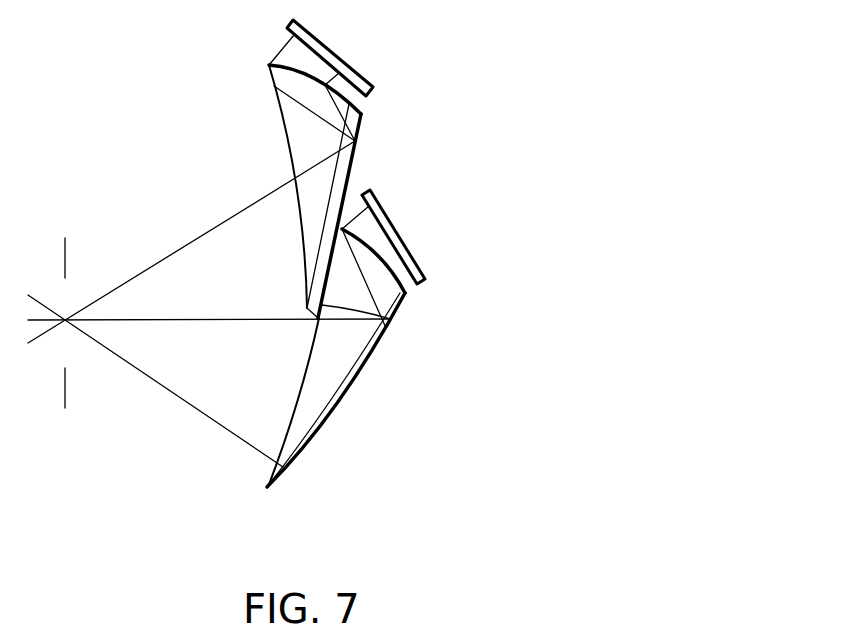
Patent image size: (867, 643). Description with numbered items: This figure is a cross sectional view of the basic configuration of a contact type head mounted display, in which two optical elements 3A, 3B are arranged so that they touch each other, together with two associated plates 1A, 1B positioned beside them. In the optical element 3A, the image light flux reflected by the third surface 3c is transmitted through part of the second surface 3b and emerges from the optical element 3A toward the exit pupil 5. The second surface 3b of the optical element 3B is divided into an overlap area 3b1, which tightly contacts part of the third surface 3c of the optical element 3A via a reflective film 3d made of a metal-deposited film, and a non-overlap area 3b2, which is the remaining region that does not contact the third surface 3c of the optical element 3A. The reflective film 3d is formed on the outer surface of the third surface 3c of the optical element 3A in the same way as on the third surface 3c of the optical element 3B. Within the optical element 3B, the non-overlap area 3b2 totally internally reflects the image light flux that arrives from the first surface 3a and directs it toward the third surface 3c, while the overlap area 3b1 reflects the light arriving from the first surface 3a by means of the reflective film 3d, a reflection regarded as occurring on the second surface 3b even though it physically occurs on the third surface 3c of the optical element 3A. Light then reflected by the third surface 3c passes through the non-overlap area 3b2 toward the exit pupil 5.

The first light receiving plate 1A is at (323, 45).
The second light receiving plate 1B is at (383, 212).
The optical element 3A is at (303, 146).
The optical element 3B is at (344, 358).
The first surface 3a is at (353, 68).
The second surface 3b is at (297, 235).
The overlap area 3b1 is at (372, 329).
The non-overlap area 3b2 is at (308, 353).
The third surface 3c is at (355, 148).
The reflective film 3d is at (392, 295).
The exit pupil 5 is at (61, 306).